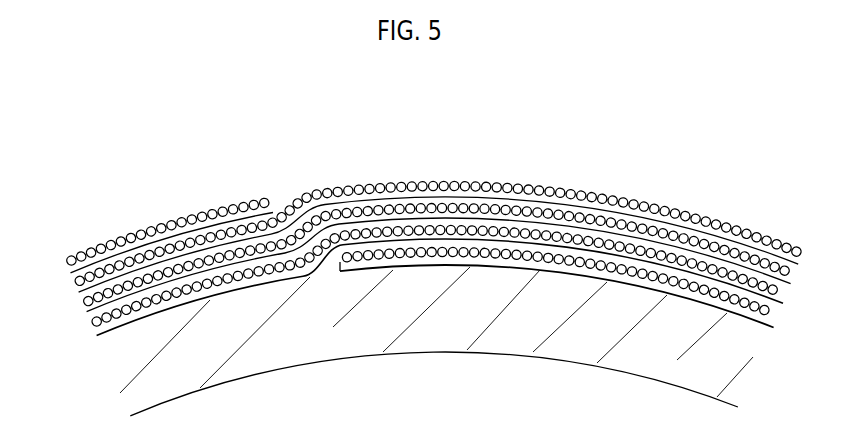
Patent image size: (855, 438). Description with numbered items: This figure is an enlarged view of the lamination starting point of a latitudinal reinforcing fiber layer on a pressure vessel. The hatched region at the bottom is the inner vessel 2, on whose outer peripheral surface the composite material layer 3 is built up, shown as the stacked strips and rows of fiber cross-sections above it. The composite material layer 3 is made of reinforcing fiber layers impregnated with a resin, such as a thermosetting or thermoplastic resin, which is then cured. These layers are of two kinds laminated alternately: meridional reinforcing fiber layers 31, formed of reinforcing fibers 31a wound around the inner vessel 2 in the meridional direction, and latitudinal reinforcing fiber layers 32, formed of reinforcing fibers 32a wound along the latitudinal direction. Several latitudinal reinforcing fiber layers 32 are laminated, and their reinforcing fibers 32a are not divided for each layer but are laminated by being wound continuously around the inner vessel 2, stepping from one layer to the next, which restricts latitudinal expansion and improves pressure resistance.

The inner vessel 2 is at (505, 338).
The composite material layer 3 is at (810, 253).
The meridional reinforcing fiber layer 31 is at (90, 330).
The reinforcing fiber 31a is at (513, 183).
The latitudinal reinforcing fiber layer 32 is at (187, 295).
The reinforcing fiber 32a is at (603, 192).